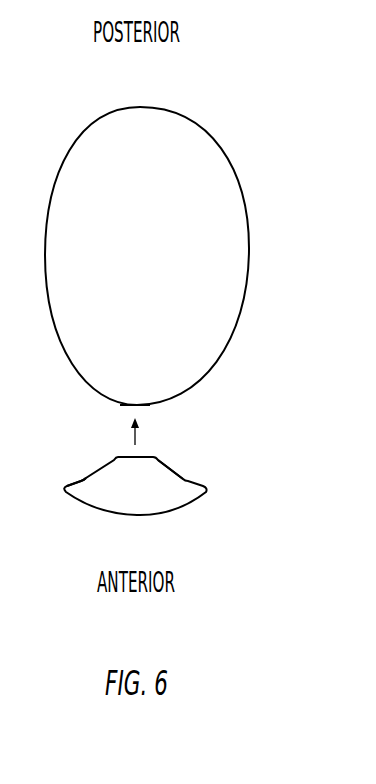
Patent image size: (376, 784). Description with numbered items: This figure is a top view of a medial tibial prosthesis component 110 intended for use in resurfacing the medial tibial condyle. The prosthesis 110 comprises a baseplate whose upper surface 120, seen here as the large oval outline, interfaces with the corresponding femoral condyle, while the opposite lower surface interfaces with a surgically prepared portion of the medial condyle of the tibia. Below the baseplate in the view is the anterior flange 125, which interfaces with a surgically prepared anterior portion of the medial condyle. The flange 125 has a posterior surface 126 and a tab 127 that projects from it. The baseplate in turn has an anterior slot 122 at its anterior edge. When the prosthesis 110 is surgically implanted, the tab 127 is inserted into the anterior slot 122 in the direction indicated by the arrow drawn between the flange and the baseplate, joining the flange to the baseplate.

The medial tibial prosthesis component 110 is at (226, 134).
The upper surface 120 is at (227, 242).
The anterior slot 122 is at (122, 406).
The anterior flange 125 is at (200, 495).
The posterior surface 126 is at (80, 480).
The tab 127 is at (155, 467).